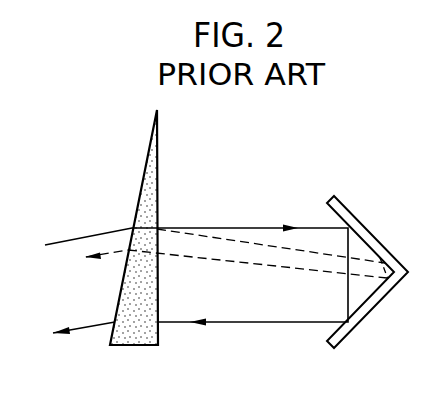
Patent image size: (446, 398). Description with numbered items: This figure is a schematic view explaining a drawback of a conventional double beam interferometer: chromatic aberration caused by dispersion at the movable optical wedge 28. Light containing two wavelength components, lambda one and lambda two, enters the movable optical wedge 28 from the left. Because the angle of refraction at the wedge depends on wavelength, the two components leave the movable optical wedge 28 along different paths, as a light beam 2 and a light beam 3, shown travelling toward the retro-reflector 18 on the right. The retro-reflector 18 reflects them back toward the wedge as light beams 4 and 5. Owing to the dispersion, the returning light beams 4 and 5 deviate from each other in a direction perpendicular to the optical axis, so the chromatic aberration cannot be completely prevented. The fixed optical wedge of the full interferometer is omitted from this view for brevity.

The movable optical wedge 28 is at (147, 172).
The light beam 2 is at (273, 227).
The light beam 3 is at (258, 246).
The retro-reflector 18 is at (365, 240).
The light beam 5 is at (107, 258).
The light beam 4 is at (92, 332).